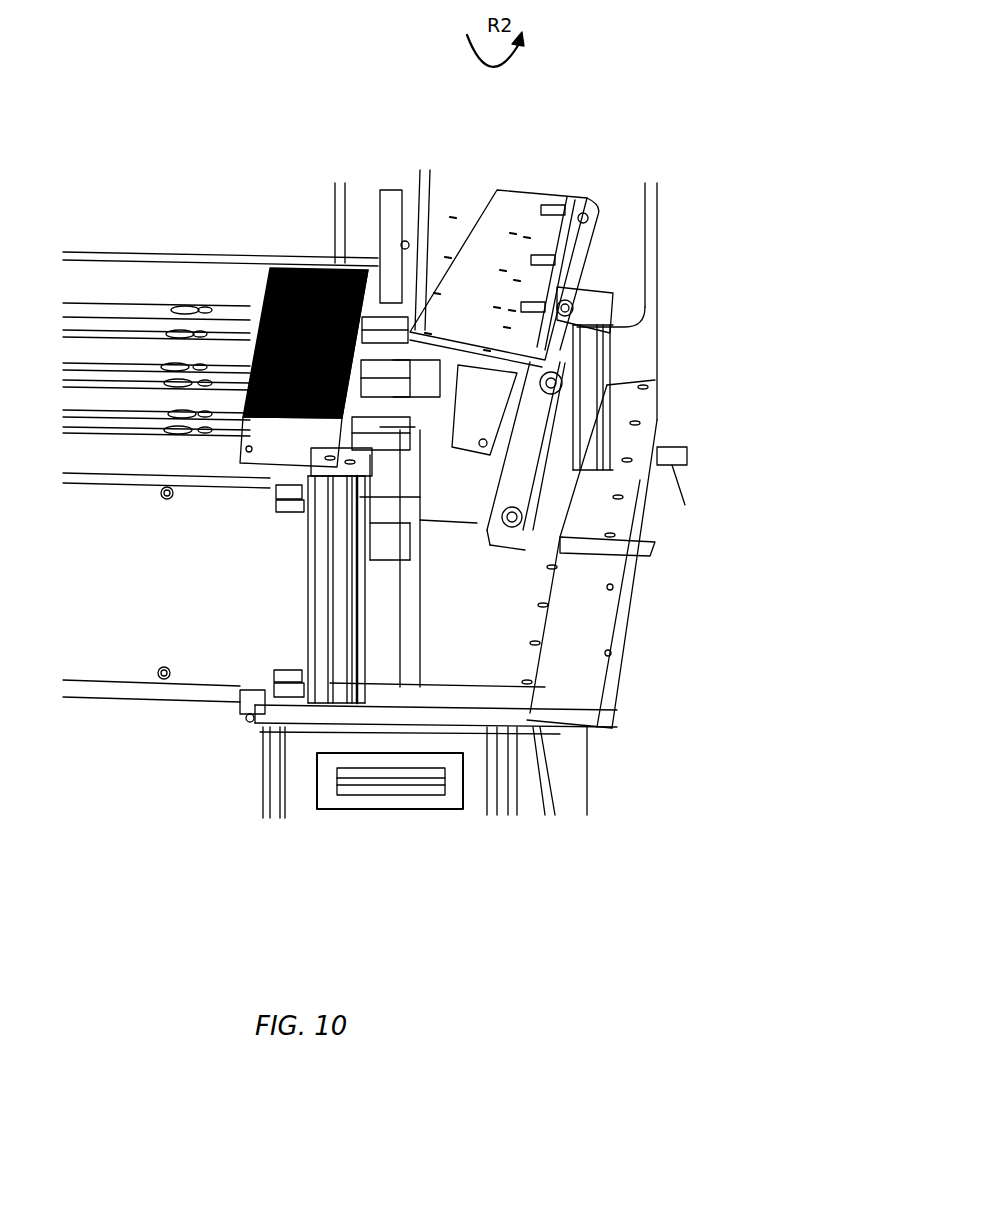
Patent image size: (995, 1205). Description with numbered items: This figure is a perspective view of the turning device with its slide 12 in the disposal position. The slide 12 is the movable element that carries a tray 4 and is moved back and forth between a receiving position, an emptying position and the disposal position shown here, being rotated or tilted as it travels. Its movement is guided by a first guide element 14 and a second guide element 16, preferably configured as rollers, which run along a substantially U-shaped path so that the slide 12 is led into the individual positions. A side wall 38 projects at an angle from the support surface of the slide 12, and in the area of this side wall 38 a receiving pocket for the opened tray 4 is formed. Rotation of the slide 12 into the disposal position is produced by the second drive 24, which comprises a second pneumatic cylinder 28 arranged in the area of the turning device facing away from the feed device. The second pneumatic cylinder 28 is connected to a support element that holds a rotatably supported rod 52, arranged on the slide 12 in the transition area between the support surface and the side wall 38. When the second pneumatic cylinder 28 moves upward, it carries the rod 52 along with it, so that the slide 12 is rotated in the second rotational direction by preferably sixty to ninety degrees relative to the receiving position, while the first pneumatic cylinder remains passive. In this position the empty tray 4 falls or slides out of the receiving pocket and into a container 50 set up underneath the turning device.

The tray 4 is at (302, 268).
The slide 12 is at (523, 547).
The first guide element 14 is at (525, 452).
The second guide element 16 is at (558, 378).
The second drive 24 is at (543, 607).
The second pneumatic cylinder 28 is at (610, 440).
The side wall 38 is at (488, 248).
The container 50 is at (432, 747).
The rod 52 is at (567, 282).